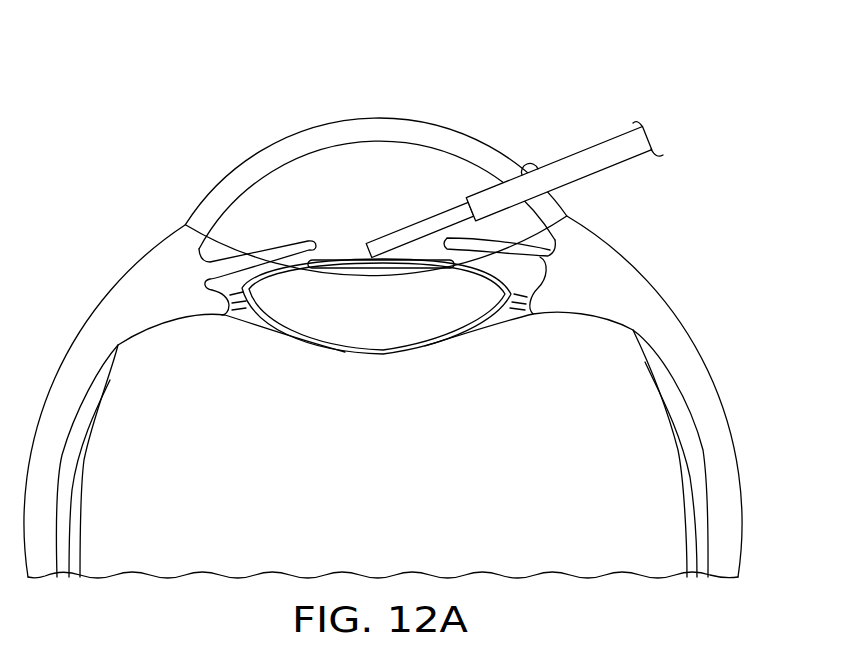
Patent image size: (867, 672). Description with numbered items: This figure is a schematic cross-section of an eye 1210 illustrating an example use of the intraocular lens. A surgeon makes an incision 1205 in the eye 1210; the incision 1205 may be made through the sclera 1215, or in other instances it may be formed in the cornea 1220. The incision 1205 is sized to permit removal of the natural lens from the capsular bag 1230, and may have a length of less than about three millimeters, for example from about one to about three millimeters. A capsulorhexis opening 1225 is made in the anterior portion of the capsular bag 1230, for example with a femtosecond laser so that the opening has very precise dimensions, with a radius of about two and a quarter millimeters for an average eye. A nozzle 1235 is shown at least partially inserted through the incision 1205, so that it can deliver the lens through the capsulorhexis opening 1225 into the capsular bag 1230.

The eye 1210 is at (108, 72).
The sclera 1215 is at (680, 325).
The cornea 1220 is at (438, 120).
The capsulorhexis opening 1225 is at (350, 256).
The capsular bag 1230 is at (310, 346).
The incision 1205 is at (522, 184).
The nozzle 1235 is at (628, 162).